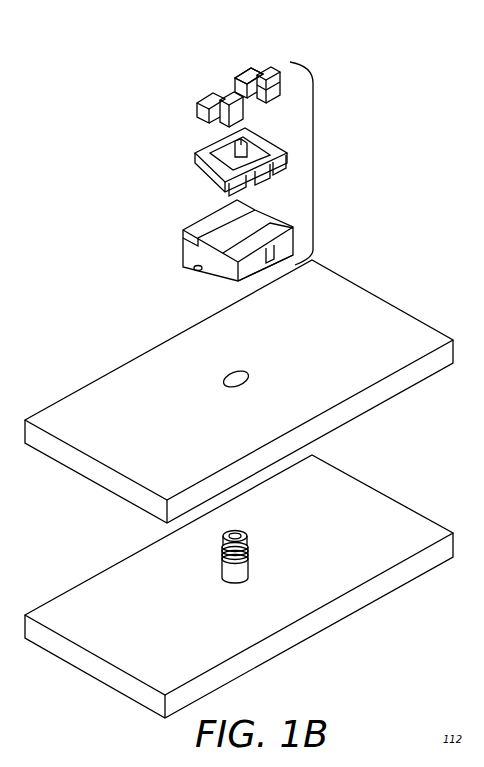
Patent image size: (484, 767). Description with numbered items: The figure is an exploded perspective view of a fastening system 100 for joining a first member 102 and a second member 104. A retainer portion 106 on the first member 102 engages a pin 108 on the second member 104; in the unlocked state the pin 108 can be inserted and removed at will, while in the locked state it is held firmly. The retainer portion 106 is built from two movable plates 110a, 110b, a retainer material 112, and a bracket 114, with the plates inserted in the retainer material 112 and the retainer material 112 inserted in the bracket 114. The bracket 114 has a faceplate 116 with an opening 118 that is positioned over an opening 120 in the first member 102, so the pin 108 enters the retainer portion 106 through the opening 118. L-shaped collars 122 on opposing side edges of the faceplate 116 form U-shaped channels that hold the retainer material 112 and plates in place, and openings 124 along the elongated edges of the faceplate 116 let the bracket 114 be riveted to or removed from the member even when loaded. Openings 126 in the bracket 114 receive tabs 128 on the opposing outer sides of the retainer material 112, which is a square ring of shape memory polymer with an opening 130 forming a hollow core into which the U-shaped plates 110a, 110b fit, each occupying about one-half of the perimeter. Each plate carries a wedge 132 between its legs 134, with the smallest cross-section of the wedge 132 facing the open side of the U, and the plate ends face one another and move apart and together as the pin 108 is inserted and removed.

The fastening system 100 is at (103, 109).
The first member 102 is at (80, 400).
The second member 104 is at (370, 503).
The retainer portion 106 is at (318, 165).
The pin 108 is at (248, 535).
The movable plate 110a is at (195, 105).
The movable plate 110b is at (240, 73).
The retainer material 112 is at (190, 158).
The bracket 114 is at (170, 228).
The faceplate 116 is at (190, 259).
The opening 118 is at (238, 242).
The opening 120 is at (222, 375).
The collar 122 is at (248, 213).
The opening 124 is at (193, 274).
The opening 126 is at (262, 266).
The tab 128 is at (212, 139).
The opening 130 is at (250, 153).
The wedge 132 is at (249, 93).
The leg 134 is at (263, 66).